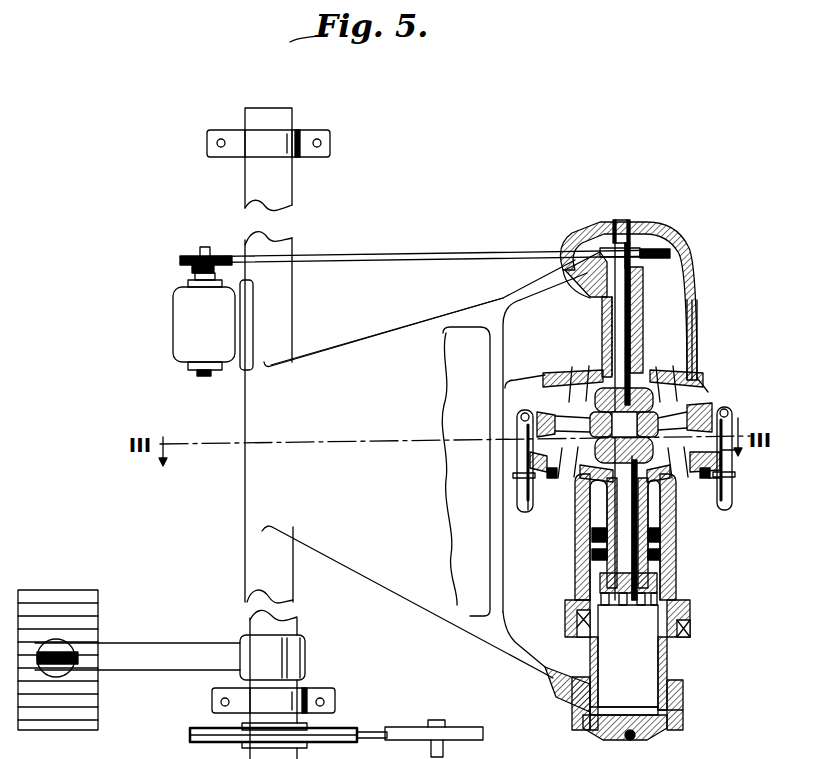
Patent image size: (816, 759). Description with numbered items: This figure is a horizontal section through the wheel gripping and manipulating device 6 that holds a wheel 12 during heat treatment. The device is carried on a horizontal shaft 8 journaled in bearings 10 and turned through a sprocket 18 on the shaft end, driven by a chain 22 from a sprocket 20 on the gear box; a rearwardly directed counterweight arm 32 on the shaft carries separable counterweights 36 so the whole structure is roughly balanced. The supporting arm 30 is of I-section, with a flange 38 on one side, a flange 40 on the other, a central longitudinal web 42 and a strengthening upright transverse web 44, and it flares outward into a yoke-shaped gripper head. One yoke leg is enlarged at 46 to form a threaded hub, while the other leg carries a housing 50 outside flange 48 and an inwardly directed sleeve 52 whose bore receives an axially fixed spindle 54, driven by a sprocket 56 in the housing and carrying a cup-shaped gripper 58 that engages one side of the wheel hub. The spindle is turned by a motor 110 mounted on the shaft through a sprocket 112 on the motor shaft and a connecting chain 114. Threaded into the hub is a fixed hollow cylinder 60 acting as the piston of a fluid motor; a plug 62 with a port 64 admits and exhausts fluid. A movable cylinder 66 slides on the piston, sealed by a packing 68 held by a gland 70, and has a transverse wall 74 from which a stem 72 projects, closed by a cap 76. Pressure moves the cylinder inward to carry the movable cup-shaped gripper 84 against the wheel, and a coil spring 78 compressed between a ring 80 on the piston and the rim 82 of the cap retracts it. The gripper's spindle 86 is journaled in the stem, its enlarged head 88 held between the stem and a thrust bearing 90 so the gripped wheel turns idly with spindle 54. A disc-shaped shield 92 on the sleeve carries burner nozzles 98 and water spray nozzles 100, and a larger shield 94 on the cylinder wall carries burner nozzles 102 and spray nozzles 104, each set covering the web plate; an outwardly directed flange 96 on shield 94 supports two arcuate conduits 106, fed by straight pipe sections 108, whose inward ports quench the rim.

The wheel gripping and manipulating device 6 is at (415, 312).
The horizontal shaft 8 is at (283, 196).
The bearings 10 is at (318, 132).
The wheel 12 is at (708, 392).
The sprocket 18 is at (200, 728).
The sprocket 20 is at (413, 727).
The chain 22 is at (373, 730).
The supporting arm 30 is at (540, 677).
The counterweight arm 32 is at (123, 648).
The counterweights 36 is at (48, 588).
The flange 38 is at (455, 322).
The flange 40 is at (471, 645).
The central longitudinal web 42 is at (461, 469).
The upright transverse web 44 is at (490, 397).
The enlargement forming supporting hub 46 is at (580, 712).
The flange 48 is at (553, 262).
The housing 50 is at (655, 222).
The sleeve 52 is at (640, 297).
The spindle 54 is at (620, 312).
The sprocket 56 is at (592, 228).
The cup-shaped gripper 58 is at (590, 404).
The fixed hollow cylinder 60 is at (667, 667).
The plug 62 is at (682, 702).
The port 64 is at (632, 742).
The movable cylinder 66 is at (672, 584).
The packing 68 is at (677, 623).
The gland 70 is at (570, 650).
The stem 72 is at (672, 553).
The transverse wall 74 is at (667, 503).
The cap 76 is at (607, 607).
The coil spring 78 is at (587, 573).
The ring 80 is at (577, 532).
The rim 82 is at (583, 598).
The cup-shaped gripper 84 is at (528, 500).
The spindle 86 is at (580, 553).
The enlarged head 88 is at (628, 656).
The thrust bearing 90 is at (647, 607).
The shield 92 is at (698, 380).
The shield 94 is at (732, 470).
The flange 96 is at (714, 481).
The burner nozzles 98 is at (567, 373).
The water spray nozzles 100 is at (567, 380).
The burner nozzles 102 is at (530, 493).
The spray nozzles 104 is at (543, 458).
The arcuate conduits 106 is at (517, 416).
The straight pipe sections 108 is at (517, 508).
The motor 110 is at (180, 305).
The sprocket 112 is at (188, 248).
The chain 114 is at (363, 251).